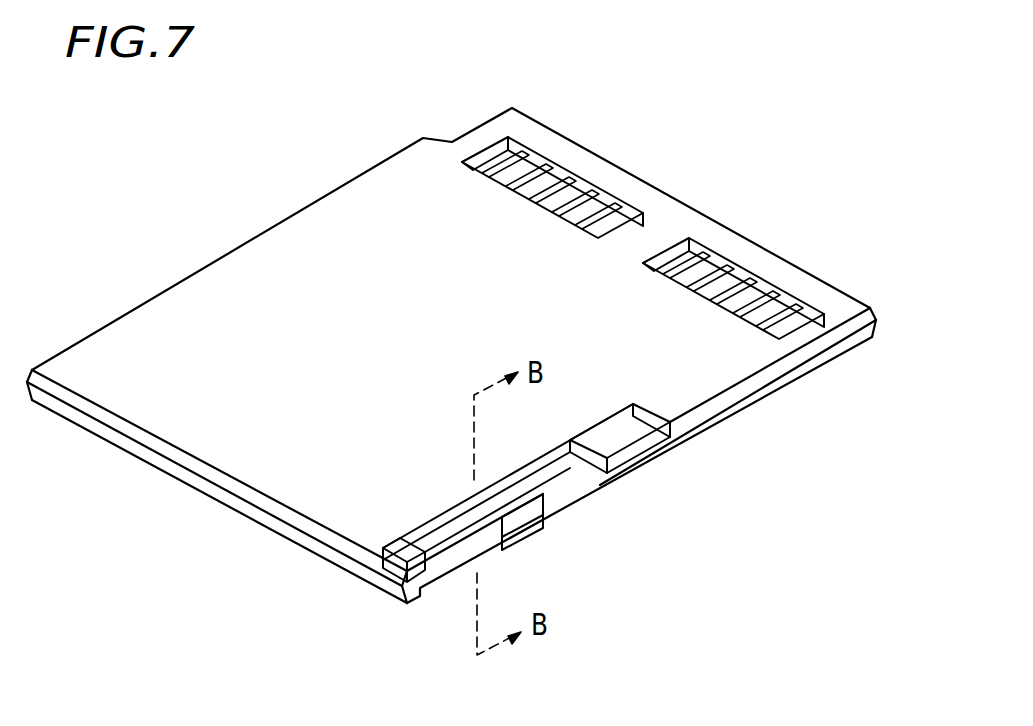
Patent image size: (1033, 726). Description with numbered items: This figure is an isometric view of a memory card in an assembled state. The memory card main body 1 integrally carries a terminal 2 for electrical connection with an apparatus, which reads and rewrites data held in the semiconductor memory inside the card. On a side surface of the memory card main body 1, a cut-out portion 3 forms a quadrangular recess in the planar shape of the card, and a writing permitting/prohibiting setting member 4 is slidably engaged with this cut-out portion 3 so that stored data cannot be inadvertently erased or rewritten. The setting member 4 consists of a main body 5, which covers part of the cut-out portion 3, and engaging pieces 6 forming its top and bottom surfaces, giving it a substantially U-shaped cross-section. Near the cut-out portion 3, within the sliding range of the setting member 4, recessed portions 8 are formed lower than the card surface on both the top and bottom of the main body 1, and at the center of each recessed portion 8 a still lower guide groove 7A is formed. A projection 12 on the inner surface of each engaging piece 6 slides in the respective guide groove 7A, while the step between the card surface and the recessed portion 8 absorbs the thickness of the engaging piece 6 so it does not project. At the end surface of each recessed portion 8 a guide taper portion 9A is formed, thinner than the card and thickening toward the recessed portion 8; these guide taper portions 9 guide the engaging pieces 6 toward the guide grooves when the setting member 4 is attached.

The memory card main body 1 is at (213, 308).
The terminal 2 is at (537, 173).
The cut-out portion 3 is at (587, 505).
The writing permitting/prohibiting setting member 4 is at (608, 558).
The main body 5 is at (523, 527).
The engaging piece 6 is at (518, 543).
The guide groove 7A is at (655, 412).
The recessed portion 8 is at (625, 440).
The guide taper portion 9 is at (463, 540).
The guide taper portion 9A is at (667, 437).
The projection 12 is at (382, 580).